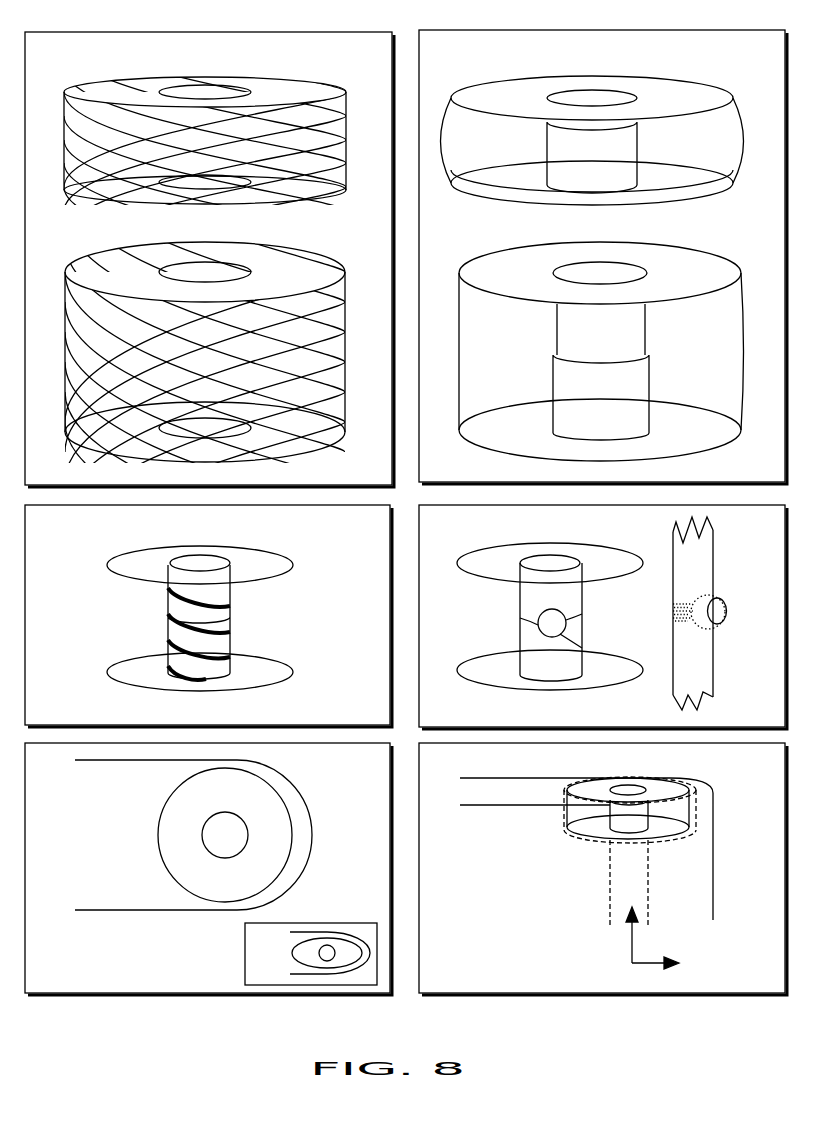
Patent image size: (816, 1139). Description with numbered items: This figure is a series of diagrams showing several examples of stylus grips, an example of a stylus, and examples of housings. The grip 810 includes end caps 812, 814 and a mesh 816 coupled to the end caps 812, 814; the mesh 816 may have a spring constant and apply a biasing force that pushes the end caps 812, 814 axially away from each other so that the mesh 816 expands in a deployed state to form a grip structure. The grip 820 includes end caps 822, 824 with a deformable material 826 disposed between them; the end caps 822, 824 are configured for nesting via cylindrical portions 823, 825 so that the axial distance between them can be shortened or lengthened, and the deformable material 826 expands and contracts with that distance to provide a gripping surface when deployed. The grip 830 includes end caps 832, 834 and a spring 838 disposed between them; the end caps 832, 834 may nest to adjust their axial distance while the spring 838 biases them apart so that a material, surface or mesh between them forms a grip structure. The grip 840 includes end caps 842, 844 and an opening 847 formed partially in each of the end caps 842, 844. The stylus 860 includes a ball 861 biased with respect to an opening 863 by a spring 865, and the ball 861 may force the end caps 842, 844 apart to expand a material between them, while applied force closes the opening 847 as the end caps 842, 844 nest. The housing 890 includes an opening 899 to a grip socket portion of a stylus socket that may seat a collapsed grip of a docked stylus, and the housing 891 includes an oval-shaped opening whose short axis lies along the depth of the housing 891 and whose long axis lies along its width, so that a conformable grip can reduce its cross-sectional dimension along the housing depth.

The grip 810 is at (367, 60).
The end cap 812 is at (98, 88).
The end cap 814 is at (103, 197).
The mesh 816 is at (268, 196).
The grip 820 is at (765, 58).
The end cap 822 is at (512, 88).
The cylindrical portion 823 is at (557, 333).
The end cap 824 is at (512, 200).
The cylindrical portion 825 is at (560, 375).
The deformable material 826 is at (675, 192).
The grip 830 is at (85, 531).
The end cap 832 is at (256, 555).
The end cap 834 is at (131, 685).
The spring 838 is at (230, 605).
The grip 840 is at (480, 531).
The end cap 842 is at (588, 553).
The end cap 844 is at (503, 690).
The opening 847 is at (568, 632).
The stylus 860 is at (710, 549).
The ball 861 is at (717, 623).
The opening 863 is at (713, 628).
The spring 865 is at (694, 620).
The housing 890 is at (367, 773).
The housing 891 is at (285, 965).
The opening 899 is at (172, 796).